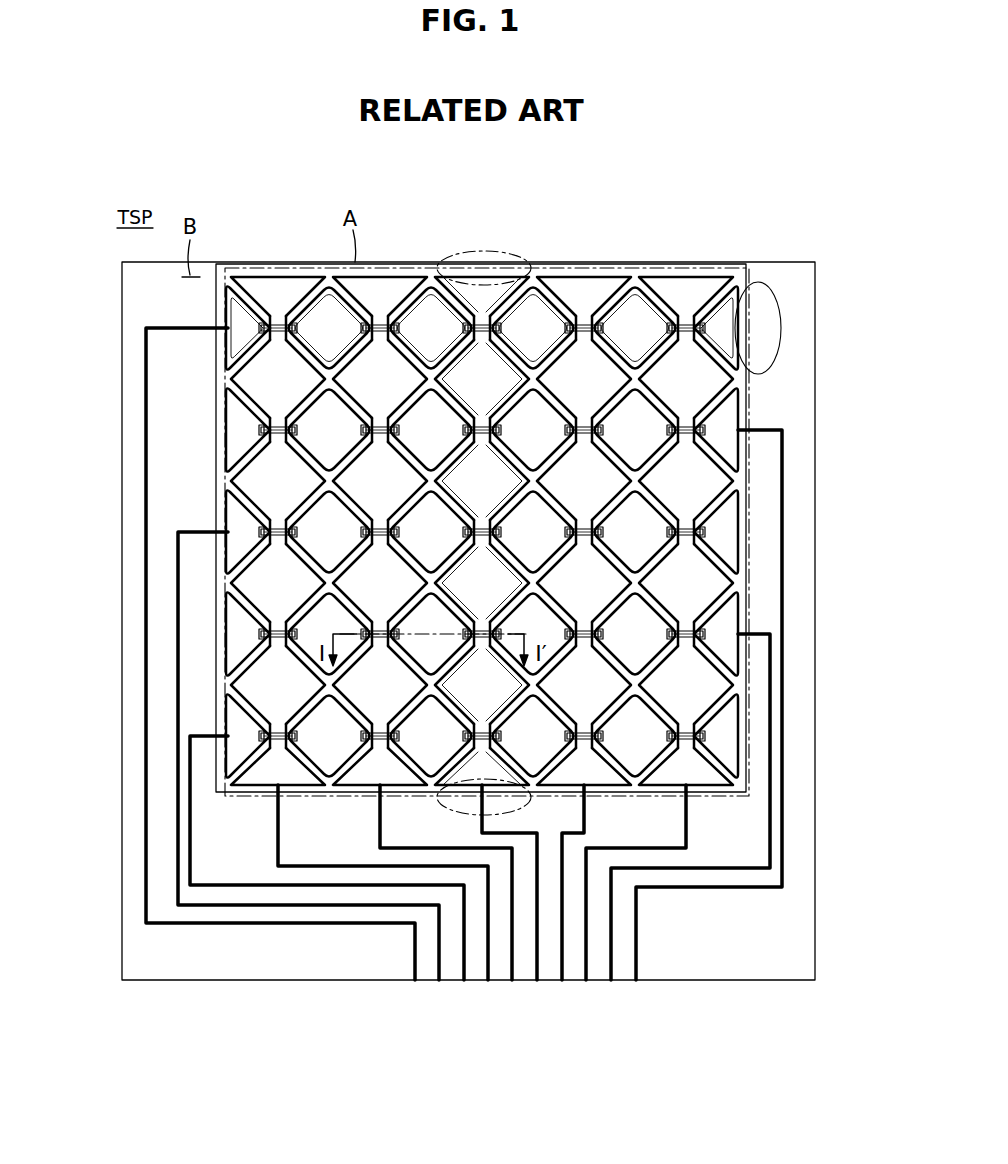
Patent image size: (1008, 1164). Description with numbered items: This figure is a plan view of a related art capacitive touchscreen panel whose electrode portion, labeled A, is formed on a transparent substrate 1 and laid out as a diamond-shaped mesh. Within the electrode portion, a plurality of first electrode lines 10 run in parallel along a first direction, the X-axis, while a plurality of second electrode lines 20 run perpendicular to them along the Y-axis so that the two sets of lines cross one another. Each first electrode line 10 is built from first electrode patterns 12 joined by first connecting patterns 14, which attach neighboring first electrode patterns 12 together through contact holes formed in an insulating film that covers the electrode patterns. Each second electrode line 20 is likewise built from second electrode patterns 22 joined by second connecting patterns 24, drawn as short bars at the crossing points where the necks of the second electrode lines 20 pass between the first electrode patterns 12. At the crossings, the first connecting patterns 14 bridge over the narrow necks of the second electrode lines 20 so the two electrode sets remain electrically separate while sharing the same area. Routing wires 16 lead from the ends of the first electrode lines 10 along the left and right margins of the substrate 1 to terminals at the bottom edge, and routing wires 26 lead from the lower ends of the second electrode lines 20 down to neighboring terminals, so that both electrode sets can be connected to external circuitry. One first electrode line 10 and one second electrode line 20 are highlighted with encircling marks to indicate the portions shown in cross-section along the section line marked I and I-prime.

The substrate 1 is at (812, 957).
The first electrode line 10 is at (782, 328).
The first electrode pattern 12 is at (640, 305).
The first connecting pattern 14 is at (260, 428).
The routing wire 16 is at (145, 369).
The second electrode line 20 is at (484, 252).
The second electrode pattern 22 is at (568, 372).
The second connecting pattern 24 is at (583, 318).
The routing wire 26 is at (278, 842).